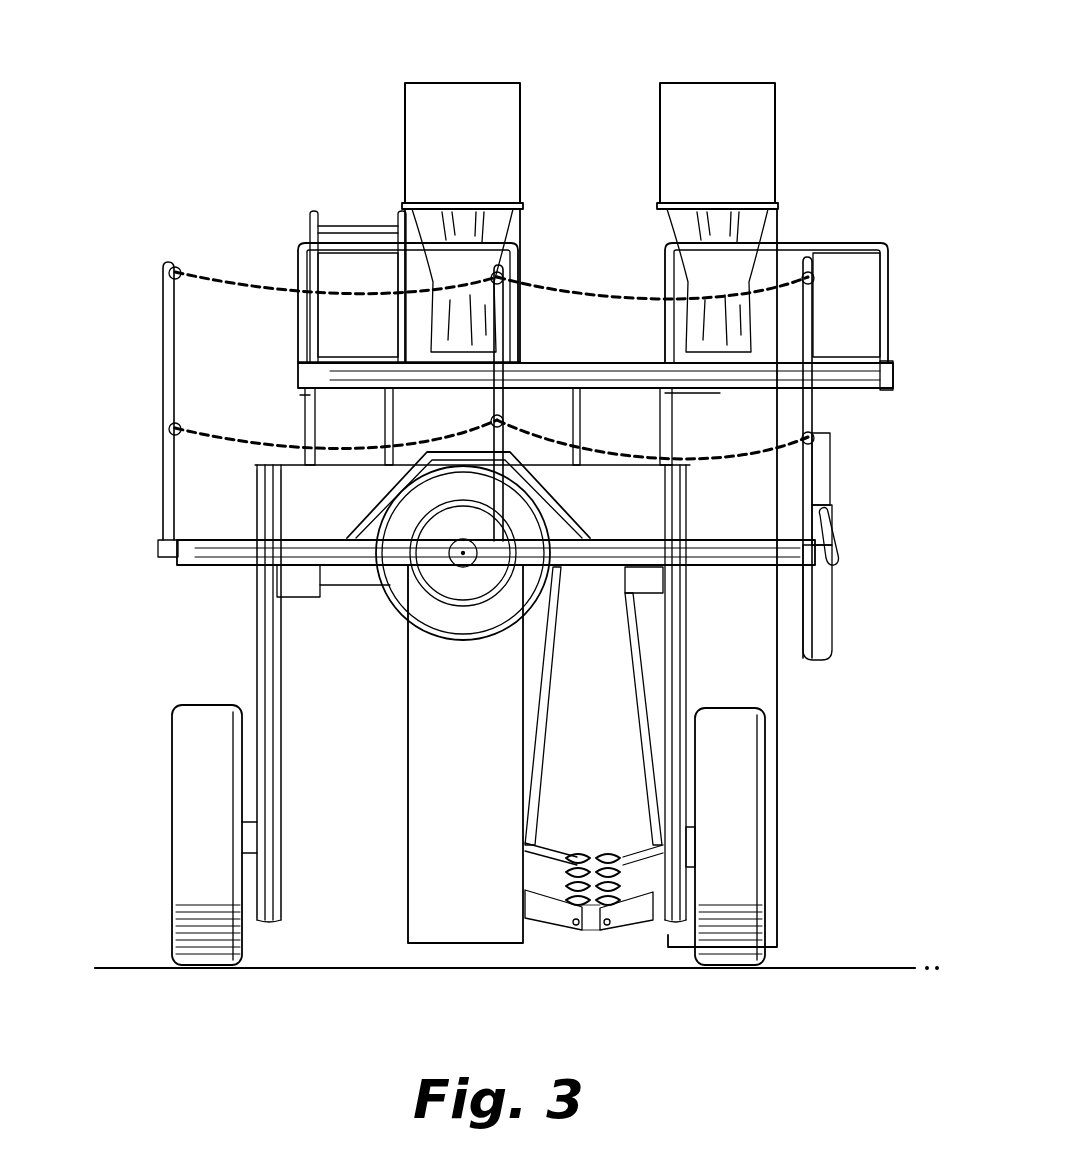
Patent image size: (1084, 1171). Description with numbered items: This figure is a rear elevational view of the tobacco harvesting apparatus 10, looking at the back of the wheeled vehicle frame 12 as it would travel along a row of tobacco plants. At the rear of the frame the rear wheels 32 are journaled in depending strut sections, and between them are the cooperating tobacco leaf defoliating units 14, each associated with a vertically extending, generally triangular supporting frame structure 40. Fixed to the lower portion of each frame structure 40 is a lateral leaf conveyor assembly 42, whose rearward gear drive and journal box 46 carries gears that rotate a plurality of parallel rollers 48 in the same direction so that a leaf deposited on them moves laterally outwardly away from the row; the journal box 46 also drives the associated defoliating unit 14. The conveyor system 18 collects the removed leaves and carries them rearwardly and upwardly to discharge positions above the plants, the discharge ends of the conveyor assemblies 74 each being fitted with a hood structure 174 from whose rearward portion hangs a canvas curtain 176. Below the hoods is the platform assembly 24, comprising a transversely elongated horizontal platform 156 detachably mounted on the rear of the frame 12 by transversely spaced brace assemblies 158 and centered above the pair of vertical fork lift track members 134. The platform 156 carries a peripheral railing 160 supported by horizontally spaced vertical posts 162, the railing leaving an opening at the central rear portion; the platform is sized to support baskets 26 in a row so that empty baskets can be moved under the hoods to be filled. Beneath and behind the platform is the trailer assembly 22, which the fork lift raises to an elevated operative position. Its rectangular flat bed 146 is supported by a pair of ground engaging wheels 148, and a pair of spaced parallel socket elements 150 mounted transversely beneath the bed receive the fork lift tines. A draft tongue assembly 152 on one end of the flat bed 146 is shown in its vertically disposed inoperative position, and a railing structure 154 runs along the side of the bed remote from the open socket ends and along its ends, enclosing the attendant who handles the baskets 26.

The apparatus 10 is at (836, 62).
The wheeled vehicle frame 12 is at (252, 620).
The tobacco leaf defoliating units 14 is at (594, 843).
The conveyor system 18 is at (780, 700).
The trailer assembly 22 is at (178, 567).
The platform assembly 24 is at (298, 371).
The baskets 26 is at (394, 212).
The rear wheels 32 is at (200, 825).
The supporting frame structure 40 is at (645, 742).
The lateral leaf conveyor assembly 42 is at (549, 929).
The rearward gear drive and journal box 46 is at (570, 930).
The rollers 48 is at (665, 872).
The conveyor assemblies 74 is at (410, 742).
The track members 134 is at (280, 676).
The flat bed 146 is at (226, 540).
The ground engaging wheels 148 is at (460, 624).
The socket elements 150 is at (302, 597).
The draft tongue assembly 152 is at (823, 606).
The railing structure 154 is at (163, 360).
The platform 156 is at (612, 363).
The brace assemblies 158 is at (385, 418).
The peripheral railing 160 is at (300, 243).
The vertical posts 162 is at (318, 317).
The hood structure 174 is at (668, 83).
The curtain 176 is at (590, 280).